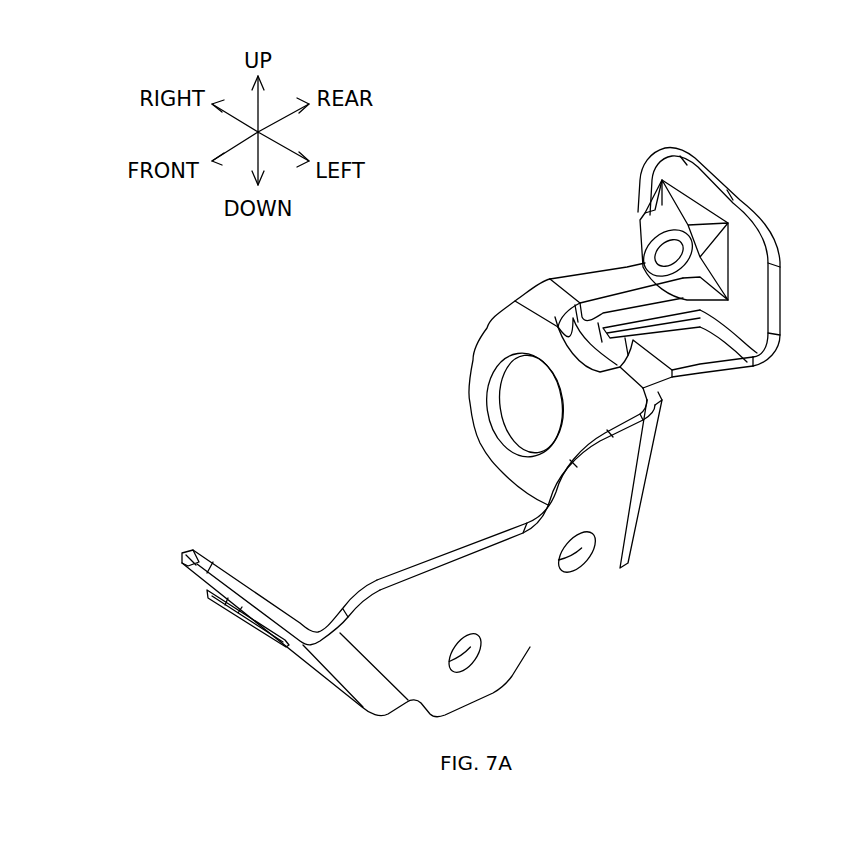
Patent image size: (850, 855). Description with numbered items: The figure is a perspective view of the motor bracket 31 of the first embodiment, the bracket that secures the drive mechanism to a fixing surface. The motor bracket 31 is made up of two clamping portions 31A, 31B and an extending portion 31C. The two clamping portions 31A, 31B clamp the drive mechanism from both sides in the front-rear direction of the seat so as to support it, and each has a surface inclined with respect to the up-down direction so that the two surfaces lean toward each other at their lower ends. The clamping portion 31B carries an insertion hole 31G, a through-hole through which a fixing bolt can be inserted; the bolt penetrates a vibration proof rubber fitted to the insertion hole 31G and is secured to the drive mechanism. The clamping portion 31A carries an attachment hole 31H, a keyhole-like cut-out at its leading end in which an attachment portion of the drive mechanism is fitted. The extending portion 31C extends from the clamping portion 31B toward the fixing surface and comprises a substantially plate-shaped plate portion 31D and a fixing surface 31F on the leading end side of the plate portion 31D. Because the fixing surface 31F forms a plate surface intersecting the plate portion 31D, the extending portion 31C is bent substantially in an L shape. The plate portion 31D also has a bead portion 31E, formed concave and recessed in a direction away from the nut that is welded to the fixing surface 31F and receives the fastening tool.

The motor bracket 31 is at (356, 402).
The clamping portion 31A is at (223, 558).
The clamping portion 31B is at (483, 360).
The extending portion 31C is at (703, 378).
The plate portion 31D is at (580, 287).
The bead portion 31E is at (632, 322).
The fixing surface 31F is at (747, 257).
The insertion hole 31G is at (500, 427).
The attachment hole 31H is at (249, 625).